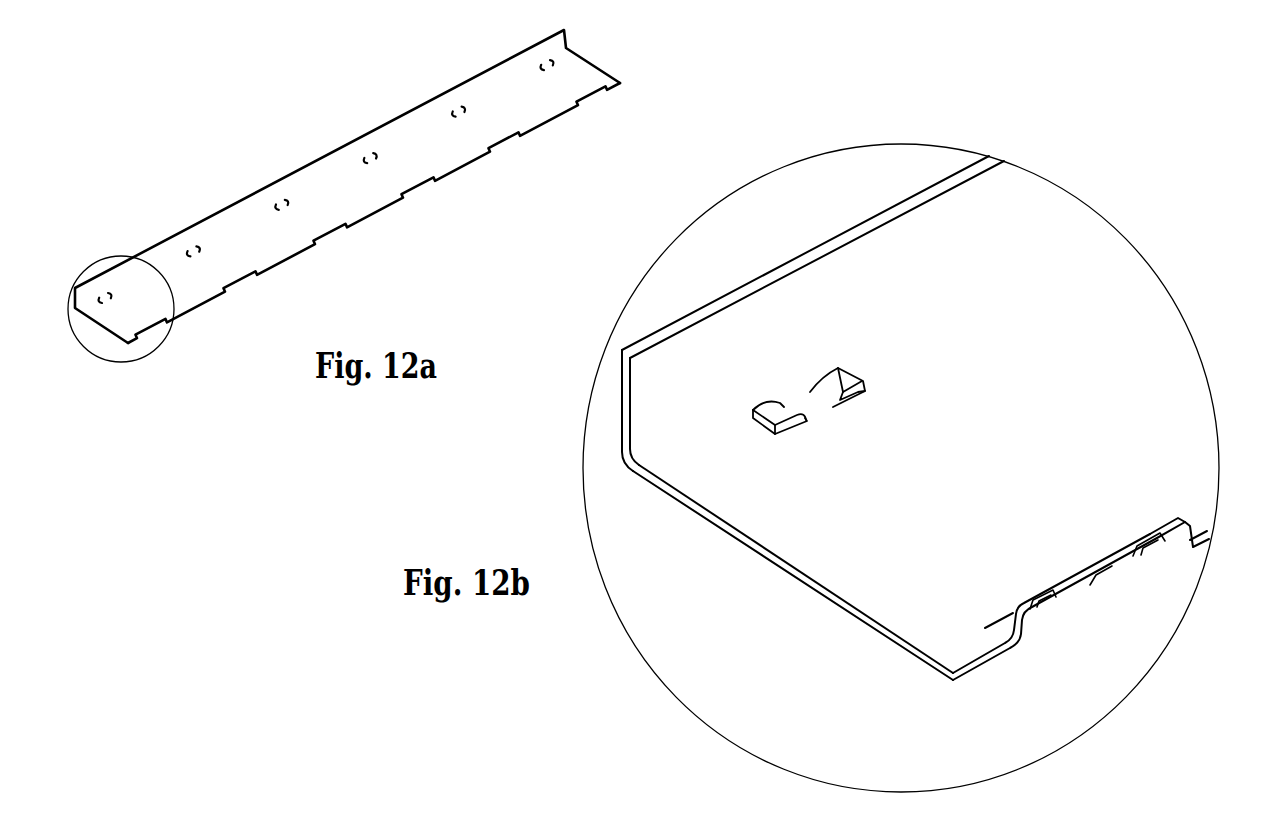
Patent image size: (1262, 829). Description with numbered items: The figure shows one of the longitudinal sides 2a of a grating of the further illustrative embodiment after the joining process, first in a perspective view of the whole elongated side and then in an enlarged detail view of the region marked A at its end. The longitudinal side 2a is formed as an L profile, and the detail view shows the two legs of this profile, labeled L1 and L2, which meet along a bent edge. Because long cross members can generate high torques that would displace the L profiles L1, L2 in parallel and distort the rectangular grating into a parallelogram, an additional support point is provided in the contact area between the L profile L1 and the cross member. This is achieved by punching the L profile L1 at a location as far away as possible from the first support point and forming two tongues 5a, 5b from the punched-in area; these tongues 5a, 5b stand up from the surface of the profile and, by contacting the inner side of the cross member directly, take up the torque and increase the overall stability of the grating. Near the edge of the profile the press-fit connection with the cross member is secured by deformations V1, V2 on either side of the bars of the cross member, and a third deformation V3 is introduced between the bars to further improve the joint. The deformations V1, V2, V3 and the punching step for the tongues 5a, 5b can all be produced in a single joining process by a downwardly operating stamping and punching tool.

In FIG. 12A, the longitudinal side 2a is at (441, 158).
In FIG. 12A, the detail region A is at (112, 309).
In FIG. 12B, the tongue 5a is at (770, 415).
In FIG. 12B, the tongue 5b is at (838, 370).
In FIG. 12B, the L profile L1 is at (822, 563).
In FIG. 12B, the L profile L2 is at (653, 402).
In FIG. 12B, the deformation V1 is at (1043, 615).
In FIG. 12B, the deformation V2 is at (1170, 538).
In FIG. 12B, the third deformation V3 is at (1098, 578).